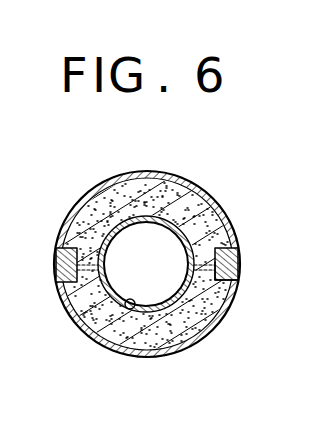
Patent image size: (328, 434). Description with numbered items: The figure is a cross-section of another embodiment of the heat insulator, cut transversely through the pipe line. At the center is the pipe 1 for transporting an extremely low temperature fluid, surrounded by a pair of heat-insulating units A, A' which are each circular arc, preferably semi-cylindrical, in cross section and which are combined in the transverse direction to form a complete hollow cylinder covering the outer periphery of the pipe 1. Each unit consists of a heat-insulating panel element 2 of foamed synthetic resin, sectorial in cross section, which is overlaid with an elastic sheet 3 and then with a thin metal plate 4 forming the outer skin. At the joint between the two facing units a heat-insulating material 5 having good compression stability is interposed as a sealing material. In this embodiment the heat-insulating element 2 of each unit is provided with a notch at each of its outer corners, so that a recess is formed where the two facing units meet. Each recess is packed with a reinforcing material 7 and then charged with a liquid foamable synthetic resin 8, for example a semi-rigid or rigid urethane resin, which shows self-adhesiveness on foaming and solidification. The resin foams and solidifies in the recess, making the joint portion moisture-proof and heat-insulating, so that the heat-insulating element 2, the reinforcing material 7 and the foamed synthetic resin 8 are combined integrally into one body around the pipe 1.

The pipe 1 is at (129, 309).
The heat-insulating panel element 2 is at (183, 327).
The elastic sheet 3 is at (63, 232).
The thin metal plate 4 is at (72, 208).
The heat-insulating material 5 is at (228, 245).
The reinforcing material 7 is at (238, 280).
The foamable synthetic resin 8 is at (240, 252).
The heat-insulating unit A is at (224, 154).
The heat-insulating unit A' is at (55, 351).